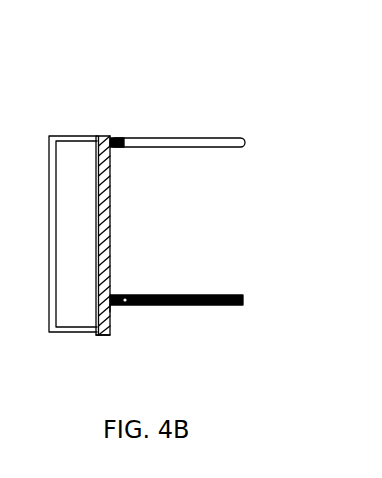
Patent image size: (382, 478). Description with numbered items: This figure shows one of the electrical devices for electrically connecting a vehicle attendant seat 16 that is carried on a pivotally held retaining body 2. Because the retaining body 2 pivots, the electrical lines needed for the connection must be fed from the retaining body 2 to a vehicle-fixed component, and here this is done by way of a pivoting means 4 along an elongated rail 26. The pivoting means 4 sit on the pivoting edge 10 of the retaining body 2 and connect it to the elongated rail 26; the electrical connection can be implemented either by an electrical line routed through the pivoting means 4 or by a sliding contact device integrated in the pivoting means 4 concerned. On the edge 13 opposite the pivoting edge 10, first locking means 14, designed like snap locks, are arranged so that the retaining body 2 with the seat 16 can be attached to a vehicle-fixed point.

The vehicle attendant seat 16 is at (83, 145).
The retaining body 2 is at (110, 207).
The edge 13 is at (112, 134).
The first locking means 14 is at (114, 149).
The elongated rail 26 is at (186, 294).
The pivoting means 4 is at (120, 311).
The pivoting edge 10 is at (103, 339).